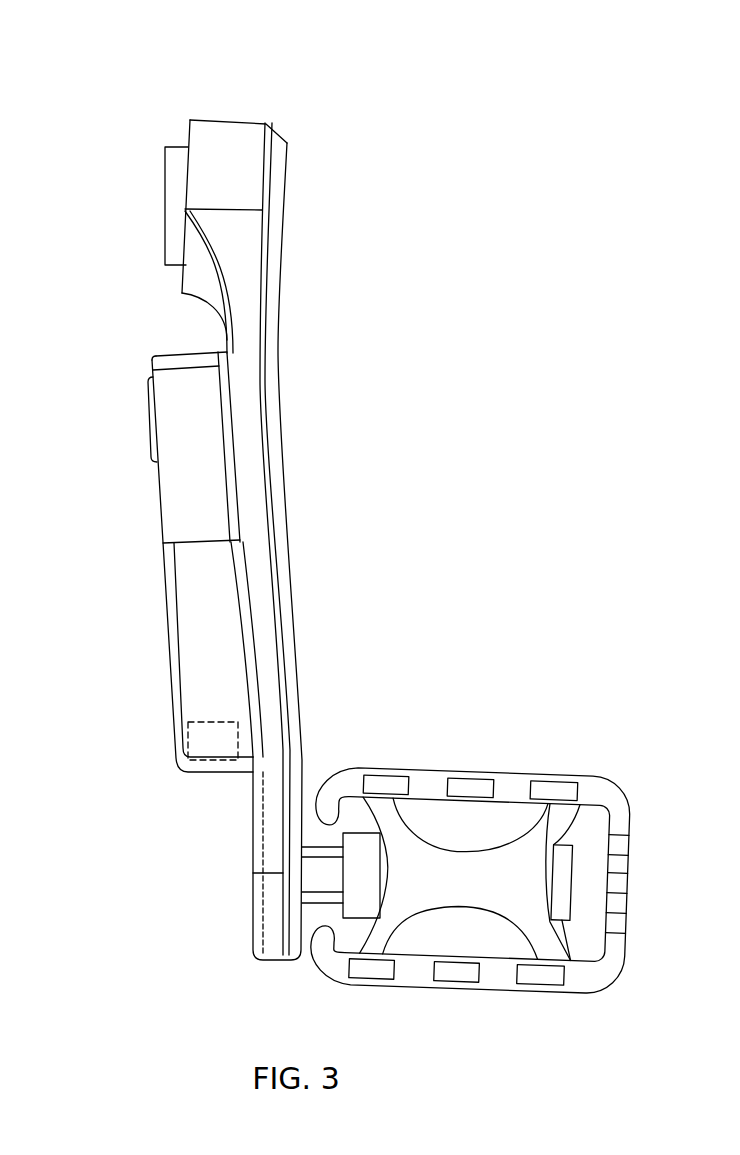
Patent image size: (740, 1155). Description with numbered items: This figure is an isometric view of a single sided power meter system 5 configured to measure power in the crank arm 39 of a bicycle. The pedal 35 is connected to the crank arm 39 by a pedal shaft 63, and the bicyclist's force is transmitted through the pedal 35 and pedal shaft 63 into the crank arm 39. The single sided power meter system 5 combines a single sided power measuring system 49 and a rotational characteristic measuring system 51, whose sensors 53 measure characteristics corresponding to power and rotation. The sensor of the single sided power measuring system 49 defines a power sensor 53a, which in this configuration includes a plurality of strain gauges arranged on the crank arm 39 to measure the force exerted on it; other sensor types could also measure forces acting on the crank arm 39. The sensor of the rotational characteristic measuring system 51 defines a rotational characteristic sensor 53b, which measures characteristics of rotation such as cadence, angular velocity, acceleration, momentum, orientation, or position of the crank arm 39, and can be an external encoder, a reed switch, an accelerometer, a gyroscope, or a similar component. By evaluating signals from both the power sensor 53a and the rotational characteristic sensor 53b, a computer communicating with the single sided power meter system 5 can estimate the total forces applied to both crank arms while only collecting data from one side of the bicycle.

The single sided power meter system 5 is at (167, 72).
The pedal 35 is at (507, 790).
The crank arm 39 is at (270, 453).
The single sided power measuring system 49 is at (100, 830).
The rotational characteristic measuring system 51 is at (175, 864).
The sensors 53 is at (177, 628).
The power sensor 53a is at (166, 672).
The rotational characteristic sensor 53b is at (213, 784).
The pedal shaft 63 is at (323, 877).